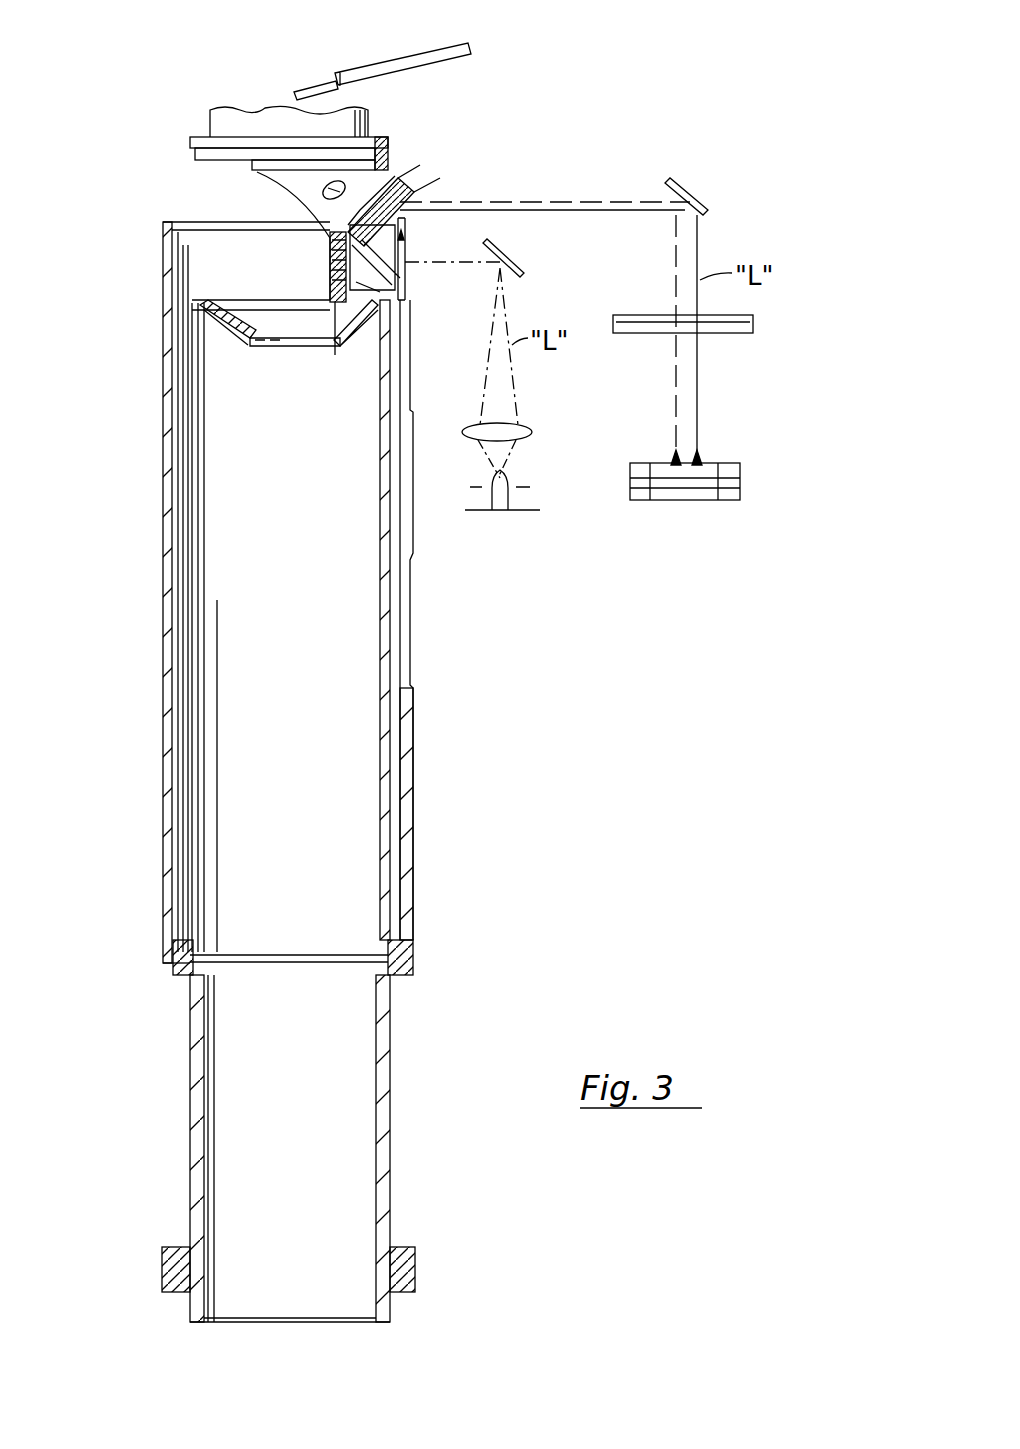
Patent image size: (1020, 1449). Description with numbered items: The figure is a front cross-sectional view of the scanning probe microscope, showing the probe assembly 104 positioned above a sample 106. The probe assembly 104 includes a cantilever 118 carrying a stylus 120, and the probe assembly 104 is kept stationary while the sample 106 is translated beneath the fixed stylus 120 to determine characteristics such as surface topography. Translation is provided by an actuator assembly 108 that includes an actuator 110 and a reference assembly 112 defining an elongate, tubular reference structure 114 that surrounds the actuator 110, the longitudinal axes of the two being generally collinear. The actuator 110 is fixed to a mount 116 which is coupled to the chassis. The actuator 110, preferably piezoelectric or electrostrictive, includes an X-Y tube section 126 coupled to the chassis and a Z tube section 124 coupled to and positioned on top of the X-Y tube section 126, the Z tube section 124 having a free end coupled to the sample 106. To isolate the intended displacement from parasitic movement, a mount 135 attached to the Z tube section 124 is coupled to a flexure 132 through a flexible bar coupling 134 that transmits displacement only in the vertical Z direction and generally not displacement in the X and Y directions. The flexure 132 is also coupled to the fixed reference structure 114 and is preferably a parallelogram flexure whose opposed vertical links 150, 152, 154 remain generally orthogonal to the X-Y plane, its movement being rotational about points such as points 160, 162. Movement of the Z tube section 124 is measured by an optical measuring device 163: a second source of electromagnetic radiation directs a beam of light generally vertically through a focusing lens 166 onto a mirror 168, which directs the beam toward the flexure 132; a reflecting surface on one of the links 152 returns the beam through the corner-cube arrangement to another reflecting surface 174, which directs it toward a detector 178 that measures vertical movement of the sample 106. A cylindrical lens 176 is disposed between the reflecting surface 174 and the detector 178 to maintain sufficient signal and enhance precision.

The probe assembly 104 is at (432, 90).
The sample 106 is at (232, 108).
The actuator assembly 108 is at (98, 495).
The actuator 110 is at (412, 1138).
The reference assembly 112 is at (440, 185).
The reference structure 114 is at (413, 875).
The mount 116 is at (410, 1247).
The cantilever 118 is at (312, 80).
The stylus 120 is at (290, 96).
The Z tube section 124 is at (385, 680).
The X-Y tube section 126 is at (385, 1062).
The flexure 132 is at (270, 180).
The flexible bar coupling 134 is at (330, 322).
The mount 135 is at (242, 348).
The vertical link 150 is at (328, 245).
The vertical link 152 is at (300, 275).
The vertical link 154 is at (365, 335).
The rotation point 160 is at (400, 305).
The rotation point 162 is at (345, 282).
The optical measuring device 163 is at (680, 155).
The focusing lens 166 is at (525, 425).
The mirror 168 is at (500, 252).
The reflecting surface 174 is at (700, 200).
The cylindrical lens 176 is at (745, 315).
The detector 178 is at (725, 462).